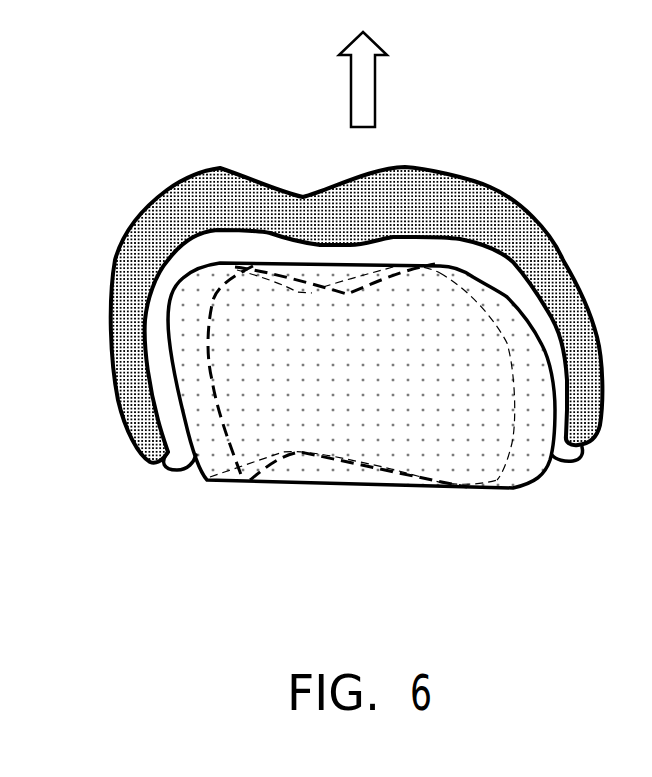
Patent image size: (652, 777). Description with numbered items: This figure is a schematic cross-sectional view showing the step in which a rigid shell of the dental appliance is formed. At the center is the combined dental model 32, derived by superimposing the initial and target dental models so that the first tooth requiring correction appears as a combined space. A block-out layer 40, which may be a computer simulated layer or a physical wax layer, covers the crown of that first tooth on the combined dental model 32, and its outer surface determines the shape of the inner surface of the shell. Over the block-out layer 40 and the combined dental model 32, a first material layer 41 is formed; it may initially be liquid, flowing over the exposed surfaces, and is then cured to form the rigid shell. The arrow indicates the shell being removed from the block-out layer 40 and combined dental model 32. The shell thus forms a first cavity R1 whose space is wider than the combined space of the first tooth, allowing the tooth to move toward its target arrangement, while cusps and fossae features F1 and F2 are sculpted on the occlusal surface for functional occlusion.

The combined dental model 32 is at (362, 420).
The block-out layer 40 is at (508, 273).
The first material layer 41 is at (480, 212).
The first cavity R1 is at (257, 233).
The cusps and fossae feature F1 is at (218, 165).
The cusps and fossae feature F2 is at (300, 195).